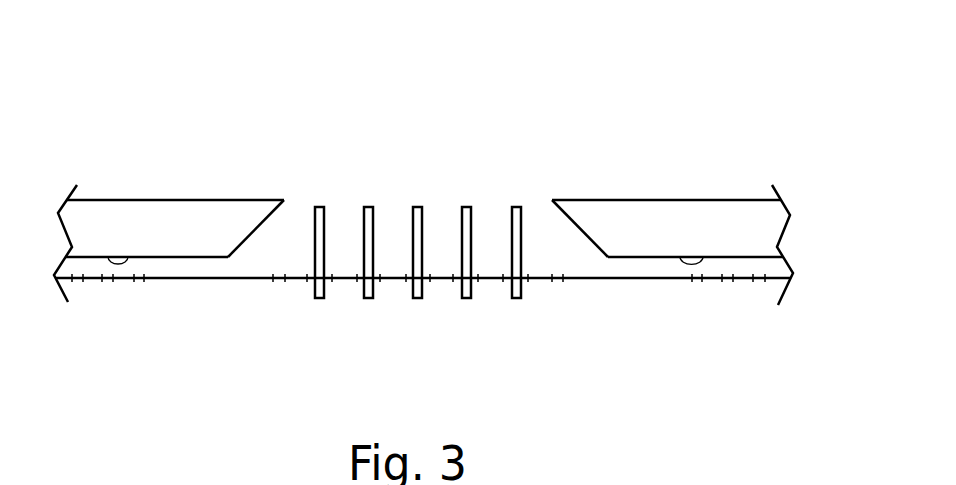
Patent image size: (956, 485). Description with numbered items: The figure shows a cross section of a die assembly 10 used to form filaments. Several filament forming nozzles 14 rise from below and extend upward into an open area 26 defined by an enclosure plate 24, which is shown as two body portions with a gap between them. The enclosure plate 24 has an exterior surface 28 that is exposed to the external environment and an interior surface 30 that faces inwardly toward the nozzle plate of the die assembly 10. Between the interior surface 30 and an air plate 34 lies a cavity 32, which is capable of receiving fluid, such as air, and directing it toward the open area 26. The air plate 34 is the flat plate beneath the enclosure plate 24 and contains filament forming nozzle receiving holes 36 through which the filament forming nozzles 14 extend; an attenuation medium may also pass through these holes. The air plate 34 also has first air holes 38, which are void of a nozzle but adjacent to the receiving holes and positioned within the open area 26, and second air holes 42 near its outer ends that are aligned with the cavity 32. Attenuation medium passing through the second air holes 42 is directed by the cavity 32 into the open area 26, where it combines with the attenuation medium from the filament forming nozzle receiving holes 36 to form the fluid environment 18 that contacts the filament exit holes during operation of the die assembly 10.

The die assembly 10 is at (677, 127).
The filament forming nozzles 14 is at (322, 208).
The fluid environment 18 is at (456, 217).
The enclosure plate 24 is at (184, 225).
The open area 26 is at (297, 211).
The exterior surface 28 is at (137, 201).
The interior surface 30 is at (110, 255).
The cavity 32 is at (221, 260).
The air plate 34 is at (193, 279).
The filament forming nozzle receiving holes 36 is at (407, 289).
The first air holes 38 is at (279, 288).
The second air holes 42 is at (137, 290).